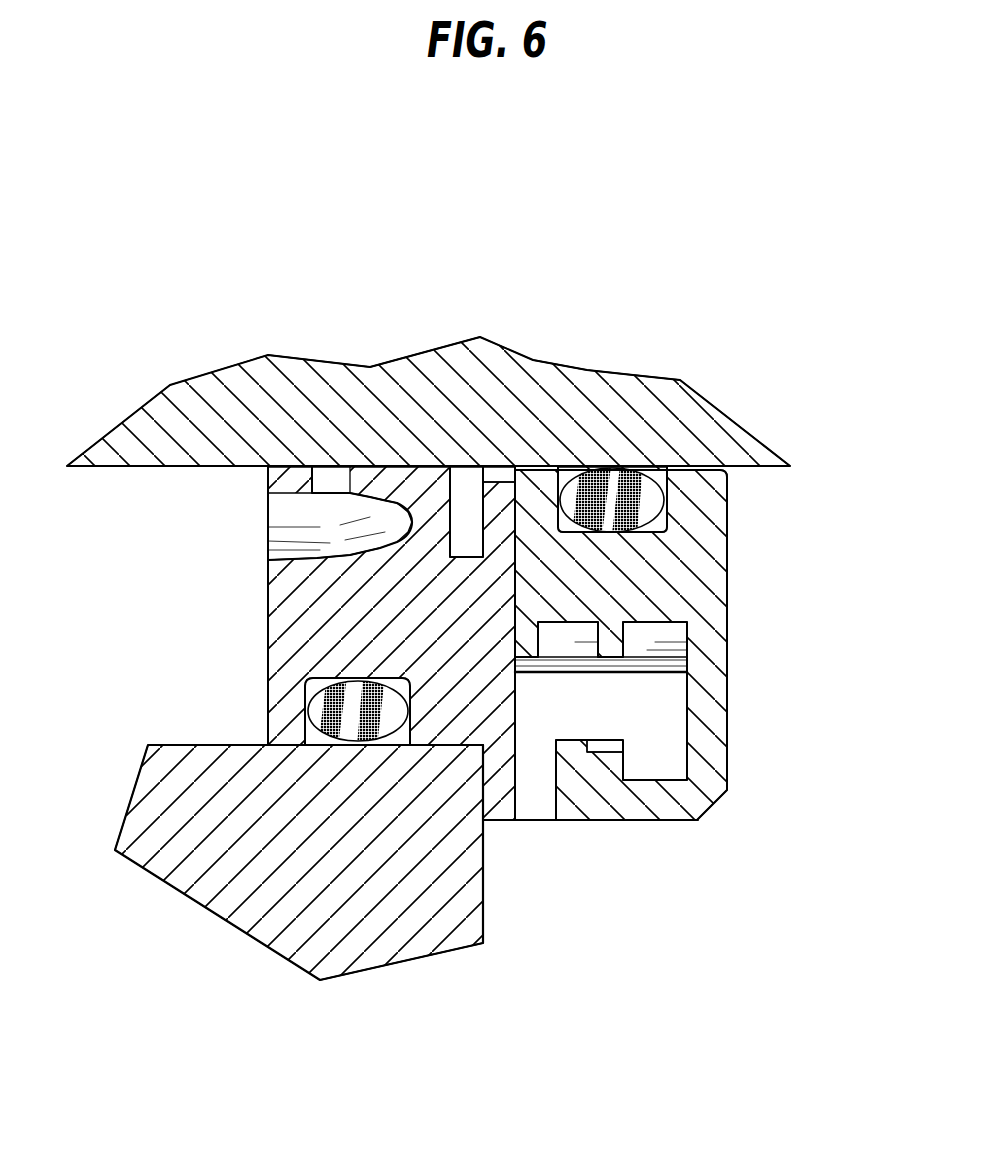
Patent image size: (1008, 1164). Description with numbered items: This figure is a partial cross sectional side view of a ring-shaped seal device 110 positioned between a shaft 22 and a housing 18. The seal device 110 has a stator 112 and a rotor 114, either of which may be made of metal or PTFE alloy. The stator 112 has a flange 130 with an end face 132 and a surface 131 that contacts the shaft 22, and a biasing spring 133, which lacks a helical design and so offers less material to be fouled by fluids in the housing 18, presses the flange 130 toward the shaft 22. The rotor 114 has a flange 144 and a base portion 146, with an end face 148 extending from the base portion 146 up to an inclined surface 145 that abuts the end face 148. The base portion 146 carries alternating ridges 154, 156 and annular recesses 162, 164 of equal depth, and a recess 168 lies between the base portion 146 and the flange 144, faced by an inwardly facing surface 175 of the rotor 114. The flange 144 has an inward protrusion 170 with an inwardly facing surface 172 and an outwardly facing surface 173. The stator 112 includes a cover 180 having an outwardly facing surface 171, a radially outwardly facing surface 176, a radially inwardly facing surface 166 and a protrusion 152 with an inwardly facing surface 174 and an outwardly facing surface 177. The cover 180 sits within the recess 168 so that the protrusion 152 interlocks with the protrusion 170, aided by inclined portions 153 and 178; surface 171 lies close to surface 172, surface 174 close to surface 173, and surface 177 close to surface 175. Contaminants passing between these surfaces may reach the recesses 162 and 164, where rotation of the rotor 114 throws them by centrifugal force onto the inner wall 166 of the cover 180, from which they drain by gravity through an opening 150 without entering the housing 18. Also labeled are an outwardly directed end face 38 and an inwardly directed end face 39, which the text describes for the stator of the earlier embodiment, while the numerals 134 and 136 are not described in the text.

The housing 18 is at (227, 900).
The shaft 22 is at (190, 405).
The outwardly directed end face 38 is at (517, 788).
The inwardly directed end face 39 is at (268, 585).
The seal device 110 is at (200, 633).
The stator 112 is at (423, 560).
The rotor 114 is at (702, 590).
The flange 130 is at (462, 512).
The surface 131 is at (335, 485).
The end face 132 is at (320, 487).
The biasing spring 133 is at (325, 512).
The bore 134 is at (497, 497).
The top wall 136 is at (548, 430).
The flange 144 is at (693, 821).
The inclined surface 145 is at (715, 806).
The base portion 146 is at (640, 548).
The end face 148 is at (727, 730).
The opening 150 is at (543, 798).
The protrusion 152 is at (693, 800).
The inclined portion 153 is at (717, 795).
The ridge 154 is at (522, 648).
The ridge 156 is at (665, 535).
The annular recess 162 is at (548, 642).
The annular recess 164 is at (648, 632).
The radially inwardly facing surface 166 is at (655, 678).
The recess 168 is at (652, 665).
The inward protrusion 170 is at (596, 762).
The outwardly facing surface 171 is at (565, 750).
The inwardly facing surface 172 is at (557, 798).
The outwardly facing surface 173 is at (650, 765).
The inwardly facing surface 174 is at (628, 757).
The inwardly facing surface 175 is at (687, 703).
The radially outwardly facing surface 176 is at (587, 750).
The outwardly facing surface 177 is at (727, 768).
The inclined portion 178 is at (563, 752).
The cover 180 is at (523, 688).